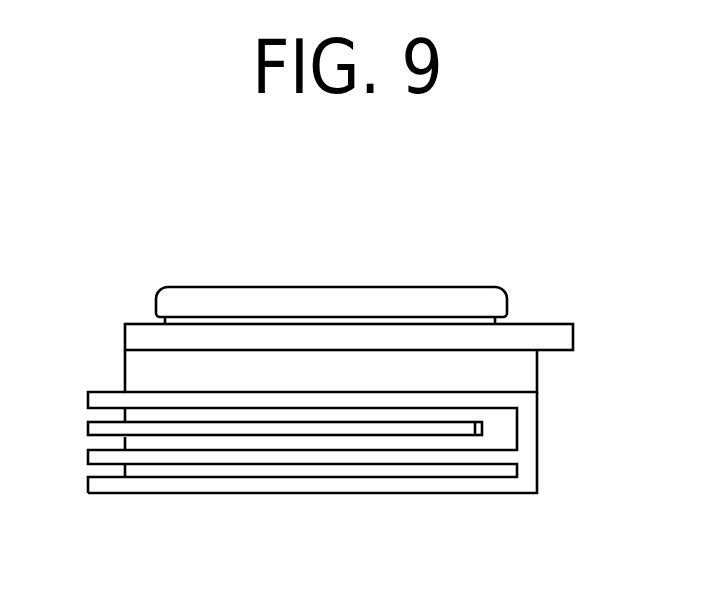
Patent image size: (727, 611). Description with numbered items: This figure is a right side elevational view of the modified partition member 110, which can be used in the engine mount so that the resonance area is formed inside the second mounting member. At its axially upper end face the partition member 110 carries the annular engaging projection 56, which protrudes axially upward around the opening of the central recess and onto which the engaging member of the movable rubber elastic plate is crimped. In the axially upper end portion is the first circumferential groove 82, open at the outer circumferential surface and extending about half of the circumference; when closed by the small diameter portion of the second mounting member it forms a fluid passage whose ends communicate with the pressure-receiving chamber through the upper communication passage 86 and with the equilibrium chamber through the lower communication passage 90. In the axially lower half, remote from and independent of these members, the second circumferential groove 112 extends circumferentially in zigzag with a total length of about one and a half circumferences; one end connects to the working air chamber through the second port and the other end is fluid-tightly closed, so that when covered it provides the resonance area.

The partition member 110 is at (435, 248).
The annular engaging projection 56 is at (295, 297).
The upper communication passage 86 is at (125, 365).
The first circumferential groove 82 is at (285, 350).
The lower communication passage 90 is at (537, 451).
The second circumferential groove 112 is at (198, 477).